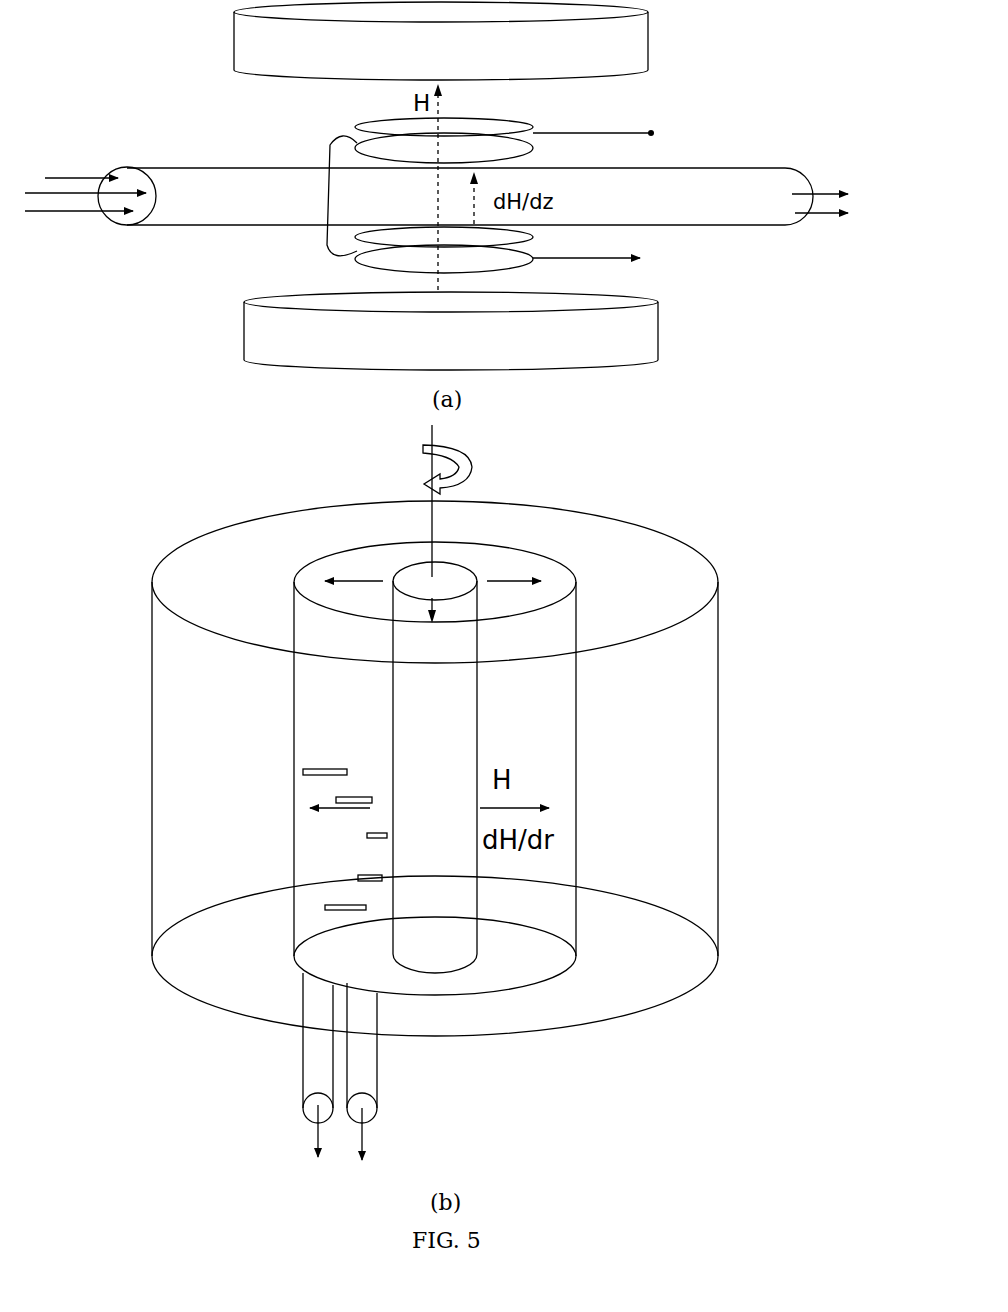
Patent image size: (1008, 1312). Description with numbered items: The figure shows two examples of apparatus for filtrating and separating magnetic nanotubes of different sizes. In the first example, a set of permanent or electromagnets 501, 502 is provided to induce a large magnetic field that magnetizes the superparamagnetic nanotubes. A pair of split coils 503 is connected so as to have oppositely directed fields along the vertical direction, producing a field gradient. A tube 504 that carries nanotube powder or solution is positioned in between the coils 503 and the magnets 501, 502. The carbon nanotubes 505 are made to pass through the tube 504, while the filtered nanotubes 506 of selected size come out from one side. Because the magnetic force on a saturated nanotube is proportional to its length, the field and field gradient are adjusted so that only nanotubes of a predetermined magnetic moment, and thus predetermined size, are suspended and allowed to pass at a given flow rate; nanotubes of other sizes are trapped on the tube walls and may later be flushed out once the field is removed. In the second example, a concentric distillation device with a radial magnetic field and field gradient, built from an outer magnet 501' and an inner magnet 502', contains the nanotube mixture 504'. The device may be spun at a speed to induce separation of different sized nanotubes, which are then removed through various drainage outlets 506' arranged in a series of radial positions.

The permanent or electromagnet 501 is at (441, 41).
The permanent or electromagnet 502 is at (451, 331).
The split coils 503 is at (538, 189).
The tube 504 is at (456, 196).
The carbon nanotubes 505 is at (90, 171).
The filtered nanotubes 506 is at (816, 221).
The outer cylindrical magnet (S pole) 501' is at (435, 768).
The inner cylindrical magnet (N pole) 502' is at (435, 767).
The nanotube mixture 504' is at (345, 839).
The drainage outlets 506' is at (395, 1068).